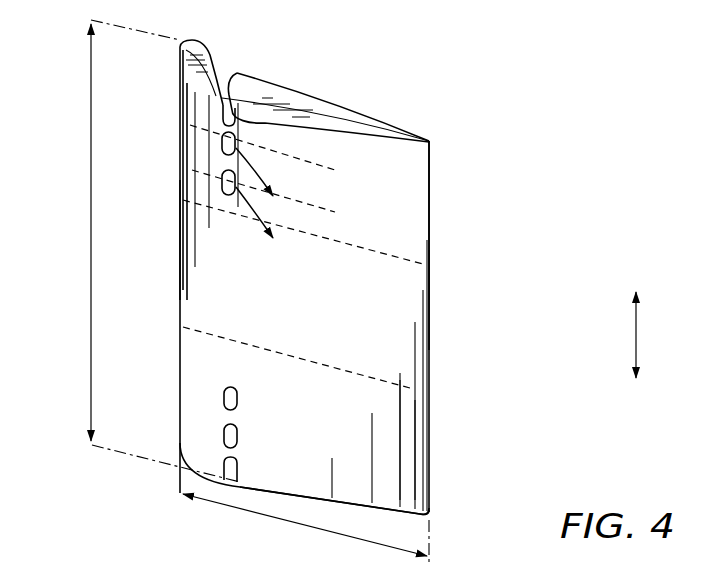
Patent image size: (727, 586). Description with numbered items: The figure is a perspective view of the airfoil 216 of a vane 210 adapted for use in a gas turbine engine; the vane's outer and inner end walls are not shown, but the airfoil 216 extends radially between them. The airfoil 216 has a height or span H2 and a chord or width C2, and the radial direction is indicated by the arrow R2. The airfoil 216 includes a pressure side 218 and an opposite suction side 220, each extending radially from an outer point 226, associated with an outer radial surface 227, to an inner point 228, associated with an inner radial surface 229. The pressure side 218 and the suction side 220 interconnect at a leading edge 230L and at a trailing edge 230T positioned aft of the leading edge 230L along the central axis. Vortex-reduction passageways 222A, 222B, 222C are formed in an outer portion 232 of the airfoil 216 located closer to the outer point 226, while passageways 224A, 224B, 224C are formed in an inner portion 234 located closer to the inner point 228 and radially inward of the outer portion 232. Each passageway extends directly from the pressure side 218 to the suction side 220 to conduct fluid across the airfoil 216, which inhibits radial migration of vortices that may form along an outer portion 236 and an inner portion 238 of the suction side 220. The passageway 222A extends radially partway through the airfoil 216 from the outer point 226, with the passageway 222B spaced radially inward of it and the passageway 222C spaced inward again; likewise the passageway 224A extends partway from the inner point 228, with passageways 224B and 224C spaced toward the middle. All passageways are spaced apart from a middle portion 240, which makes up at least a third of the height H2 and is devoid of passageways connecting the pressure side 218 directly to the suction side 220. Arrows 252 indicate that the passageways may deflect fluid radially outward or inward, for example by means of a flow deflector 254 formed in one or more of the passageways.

The vane 210 is at (530, 27).
The airfoil 216 is at (416, 68).
The pressure side 218 is at (272, 78).
The suction side 220 is at (388, 199).
The vortex-reduction passageway 222A is at (241, 143).
The vortex-reduction passageway 222B is at (243, 122).
The vortex-reduction passageway 222C is at (229, 200).
The vortex-reduction passageway 224A is at (243, 466).
The vortex-reduction passageway 224B is at (243, 432).
The vortex-reduction passageway 224C is at (243, 395).
The outer point 226 is at (292, 93).
The outer radial surface 227 is at (247, 80).
The inner point 228 is at (321, 504).
The inner radial surface 229 is at (431, 517).
The leading edge 230L is at (177, 228).
The trailing edge 230T is at (436, 299).
The outer portion 232 is at (361, 177).
The inner portion 234 is at (383, 472).
The outer portion of the suction side 236 is at (332, 156).
The inner portion of the suction side 238 is at (358, 471).
The middle portion 240 is at (361, 295).
The arrows 252 is at (237, 183).
The flow deflector 254 is at (220, 147).
The height H2 is at (91, 240).
The chord C2 is at (213, 503).
The arrow indicating radial direction R2 is at (636, 333).